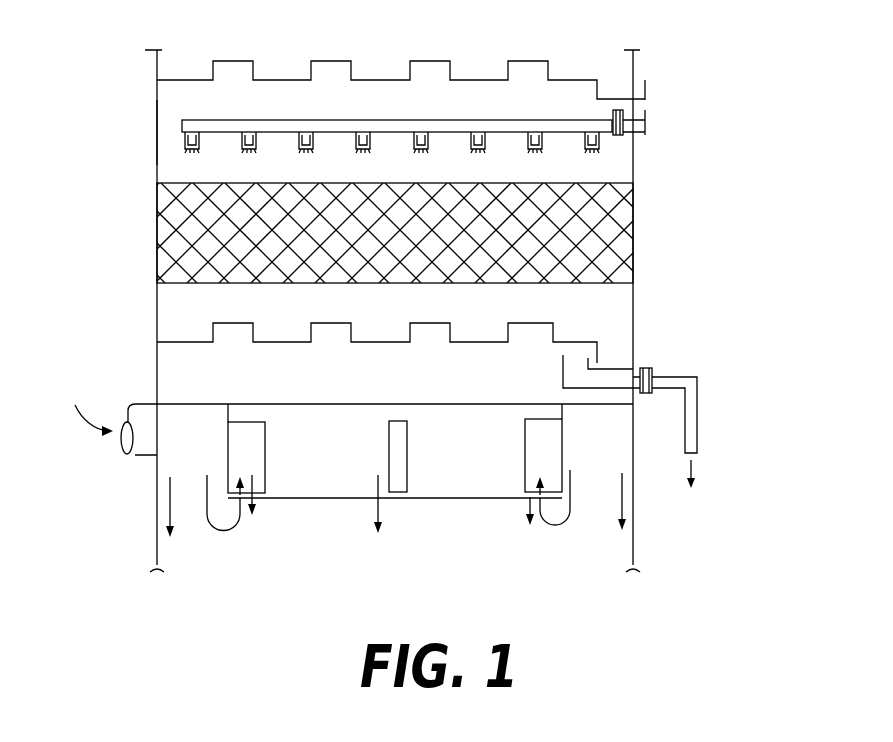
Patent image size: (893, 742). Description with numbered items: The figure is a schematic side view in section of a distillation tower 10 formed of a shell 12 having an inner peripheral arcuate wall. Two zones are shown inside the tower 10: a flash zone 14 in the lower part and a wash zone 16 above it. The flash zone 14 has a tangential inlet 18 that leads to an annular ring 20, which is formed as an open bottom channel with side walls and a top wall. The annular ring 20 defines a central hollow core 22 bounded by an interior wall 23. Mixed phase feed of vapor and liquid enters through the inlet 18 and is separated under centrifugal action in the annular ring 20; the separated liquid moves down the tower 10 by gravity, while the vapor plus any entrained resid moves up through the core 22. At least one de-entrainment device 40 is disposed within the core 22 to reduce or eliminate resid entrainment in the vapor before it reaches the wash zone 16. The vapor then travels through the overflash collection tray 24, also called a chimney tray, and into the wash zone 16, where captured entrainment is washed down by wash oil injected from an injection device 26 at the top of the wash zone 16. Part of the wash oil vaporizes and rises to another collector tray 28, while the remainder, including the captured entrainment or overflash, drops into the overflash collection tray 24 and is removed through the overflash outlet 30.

The distillation tower 10 is at (116, 90).
The shell 12 is at (156, 166).
The flash zone 14 is at (434, 549).
The wash zone 16 is at (156, 236).
The tangential inlet 18 is at (142, 450).
The annular ring 20 is at (188, 402).
The central hollow core 22 is at (320, 427).
The interior wall 23 is at (562, 412).
The overflash collection tray 24 is at (580, 342).
The injection device 26 is at (645, 127).
The collector tray 28 is at (575, 78).
The overflash outlet 30 is at (697, 427).
The de-entrainment device 40 is at (258, 452).